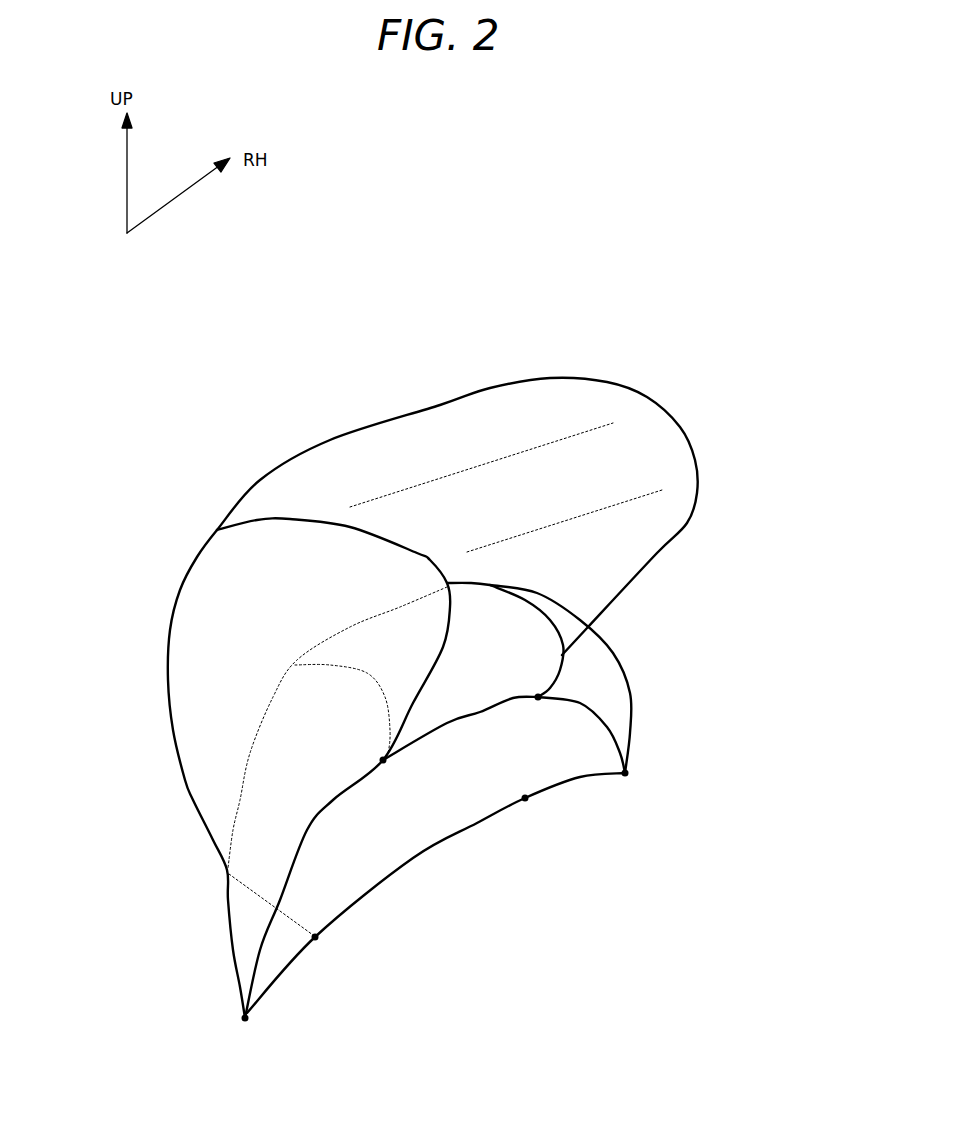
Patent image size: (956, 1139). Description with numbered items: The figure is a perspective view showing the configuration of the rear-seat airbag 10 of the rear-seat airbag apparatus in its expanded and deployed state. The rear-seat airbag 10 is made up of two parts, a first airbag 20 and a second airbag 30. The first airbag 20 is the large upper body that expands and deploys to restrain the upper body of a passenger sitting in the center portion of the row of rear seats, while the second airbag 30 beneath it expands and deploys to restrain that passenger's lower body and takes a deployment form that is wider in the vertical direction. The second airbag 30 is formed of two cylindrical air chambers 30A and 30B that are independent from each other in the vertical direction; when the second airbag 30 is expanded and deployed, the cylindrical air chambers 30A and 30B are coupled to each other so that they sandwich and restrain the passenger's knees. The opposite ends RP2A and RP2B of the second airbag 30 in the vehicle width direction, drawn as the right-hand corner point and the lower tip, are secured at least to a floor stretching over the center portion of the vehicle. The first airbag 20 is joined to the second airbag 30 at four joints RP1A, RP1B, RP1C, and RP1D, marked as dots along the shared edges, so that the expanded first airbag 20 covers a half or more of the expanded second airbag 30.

The rear-seat airbag 10 is at (752, 168).
The first airbag 20 is at (457, 450).
The second airbag 30 is at (413, 769).
The cylindrical air chamber 30A is at (513, 652).
The cylindrical air chamber 30B is at (347, 827).
The joint RP1A is at (383, 760).
The joint RP1B is at (315, 937).
The joint RP1C is at (590, 698).
The joint RP1D is at (527, 797).
The end of second airbag RP2A is at (623, 775).
The end of second airbag RP2B is at (240, 1015).